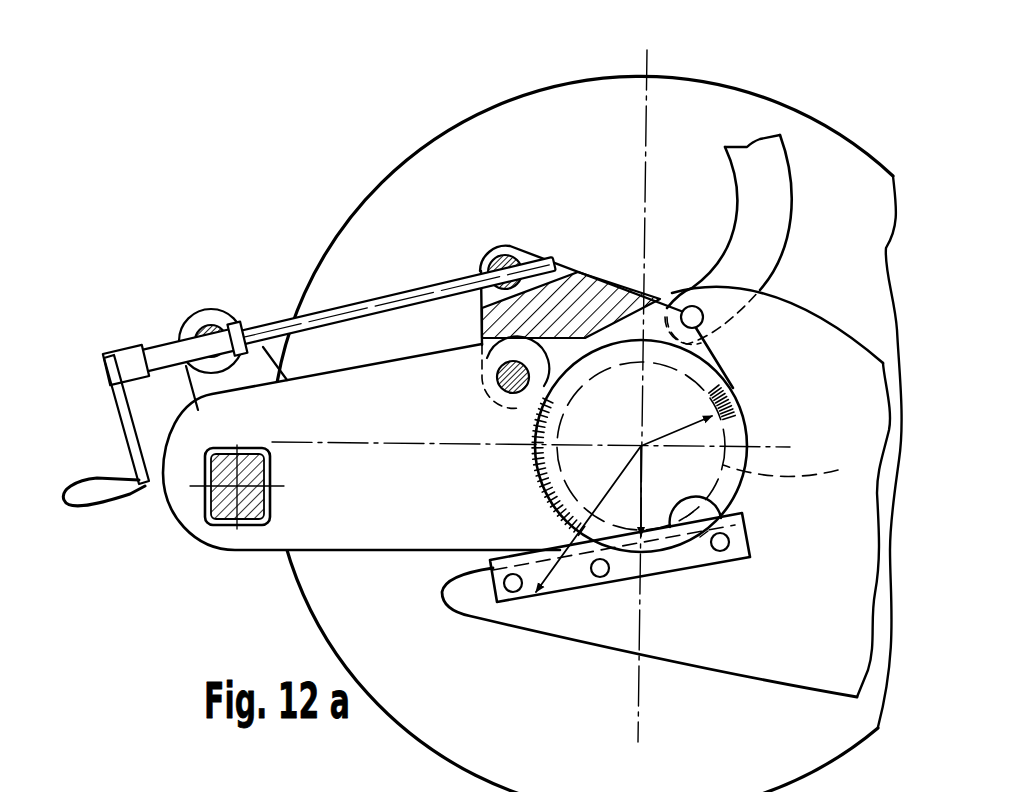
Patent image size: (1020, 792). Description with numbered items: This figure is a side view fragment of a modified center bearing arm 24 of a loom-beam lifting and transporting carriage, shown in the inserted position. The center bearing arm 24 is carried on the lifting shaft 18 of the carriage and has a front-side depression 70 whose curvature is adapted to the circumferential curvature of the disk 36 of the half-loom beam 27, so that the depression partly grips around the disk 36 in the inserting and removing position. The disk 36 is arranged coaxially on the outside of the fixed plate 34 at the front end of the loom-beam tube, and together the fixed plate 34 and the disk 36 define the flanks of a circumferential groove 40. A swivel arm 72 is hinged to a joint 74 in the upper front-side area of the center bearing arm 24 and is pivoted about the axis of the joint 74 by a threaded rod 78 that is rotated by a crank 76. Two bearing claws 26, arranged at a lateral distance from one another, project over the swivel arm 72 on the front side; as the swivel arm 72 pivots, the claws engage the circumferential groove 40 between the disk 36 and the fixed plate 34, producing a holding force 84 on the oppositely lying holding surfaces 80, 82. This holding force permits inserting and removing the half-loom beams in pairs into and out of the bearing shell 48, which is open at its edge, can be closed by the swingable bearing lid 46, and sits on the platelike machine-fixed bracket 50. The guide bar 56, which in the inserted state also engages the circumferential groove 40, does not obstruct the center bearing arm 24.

The lifting shaft 18 is at (240, 524).
The center bearing arm 24 is at (318, 505).
The bearing claws 26 is at (716, 348).
The half-loom beam 27 is at (552, 132).
The fixed plate 34 is at (405, 218).
The disk 36 is at (737, 440).
The circumferential groove 40 is at (797, 466).
The bearing lid 46 is at (770, 212).
The bearing shell 48 is at (723, 517).
The machine-fixed bracket 50 is at (814, 345).
The guide bar 56 is at (688, 562).
The front-side depression 70 is at (562, 452).
The swivel arm 72 is at (588, 305).
The joint 74 is at (513, 393).
The crank 76 is at (118, 416).
The threaded rod 78 is at (313, 313).
The holding surface 80 is at (543, 507).
The holding surface 82 is at (716, 394).
The holding force 84 is at (625, 488).